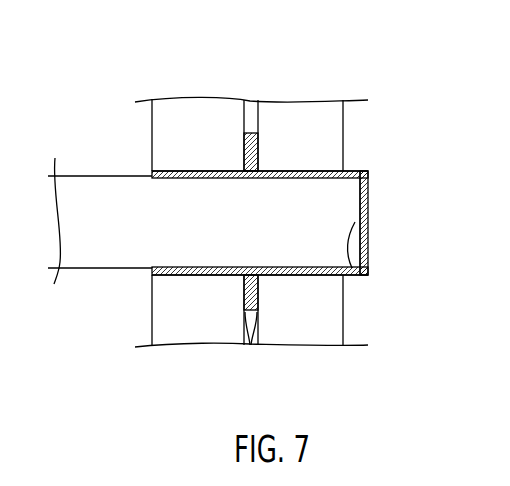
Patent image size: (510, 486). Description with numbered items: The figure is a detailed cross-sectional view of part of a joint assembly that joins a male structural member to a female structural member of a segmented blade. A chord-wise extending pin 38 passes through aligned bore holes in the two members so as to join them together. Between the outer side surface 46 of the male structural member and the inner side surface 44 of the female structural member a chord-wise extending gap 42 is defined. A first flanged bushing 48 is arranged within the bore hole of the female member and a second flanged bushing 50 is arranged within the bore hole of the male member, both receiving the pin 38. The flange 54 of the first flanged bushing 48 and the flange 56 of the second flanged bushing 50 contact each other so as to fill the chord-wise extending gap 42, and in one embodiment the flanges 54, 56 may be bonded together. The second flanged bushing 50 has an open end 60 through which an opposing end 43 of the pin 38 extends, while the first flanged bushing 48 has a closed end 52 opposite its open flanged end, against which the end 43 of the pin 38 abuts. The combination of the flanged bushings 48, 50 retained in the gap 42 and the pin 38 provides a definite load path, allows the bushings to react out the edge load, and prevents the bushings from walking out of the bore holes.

The chord-wise extending pin 38 is at (108, 229).
The chord-wise extending gap 42 is at (250, 112).
The opposing end of the chord-wise extending pin 43 is at (352, 268).
The inner side surface of the female structural member 44 is at (260, 345).
The outer side surface of the male structural member 46 is at (245, 345).
The first flanged bushing 48 is at (369, 193).
The second flanged bushing 50 is at (178, 277).
The closed end of the first flanged bushing 52 is at (369, 248).
The flange of the first flanged bushing 54 is at (259, 160).
The flange of the second flanged bushing 56 is at (245, 155).
The open end of the second flanged bushing 60 is at (150, 176).